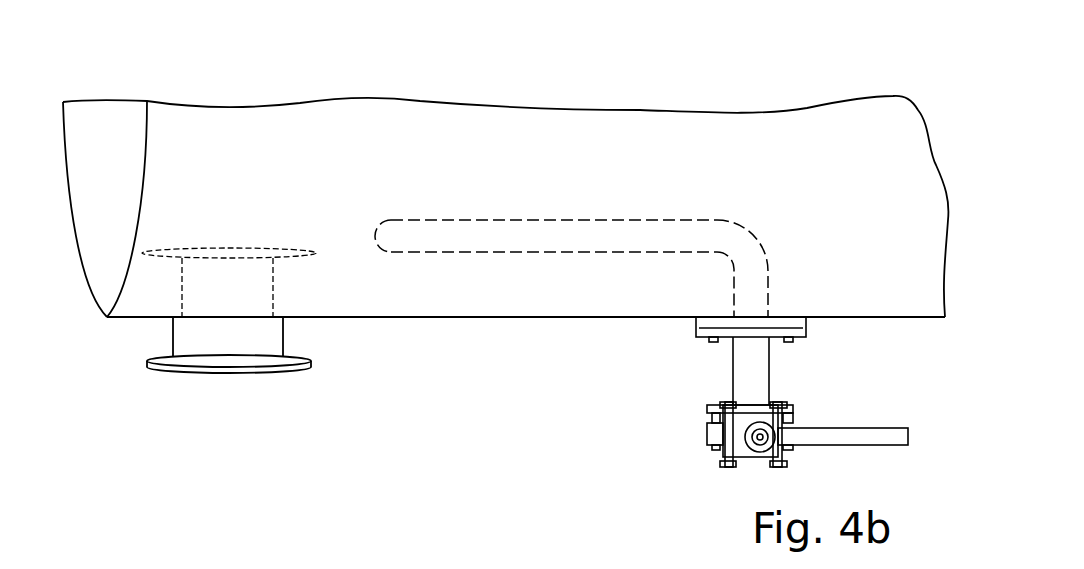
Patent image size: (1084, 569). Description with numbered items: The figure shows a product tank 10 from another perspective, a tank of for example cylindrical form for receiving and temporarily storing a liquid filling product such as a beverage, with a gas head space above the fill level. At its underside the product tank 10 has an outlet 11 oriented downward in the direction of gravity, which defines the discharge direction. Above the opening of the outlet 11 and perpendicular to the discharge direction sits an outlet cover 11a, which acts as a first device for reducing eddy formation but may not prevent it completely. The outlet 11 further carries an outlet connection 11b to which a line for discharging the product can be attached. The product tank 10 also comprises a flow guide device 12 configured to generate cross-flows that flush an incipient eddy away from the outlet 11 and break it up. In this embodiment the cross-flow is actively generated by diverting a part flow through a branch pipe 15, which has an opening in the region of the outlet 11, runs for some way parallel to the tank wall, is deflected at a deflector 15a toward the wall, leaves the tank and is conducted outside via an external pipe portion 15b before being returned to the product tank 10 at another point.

The product tank 10 is at (632, 78).
The outlet 11 is at (247, 405).
The outlet cover 11a is at (220, 248).
The outlet connection 11b is at (212, 363).
The flow guide device 12 is at (503, 288).
The branch pipe 15 is at (633, 178).
The deflector 15a is at (742, 247).
The external pipe portion 15b is at (762, 375).